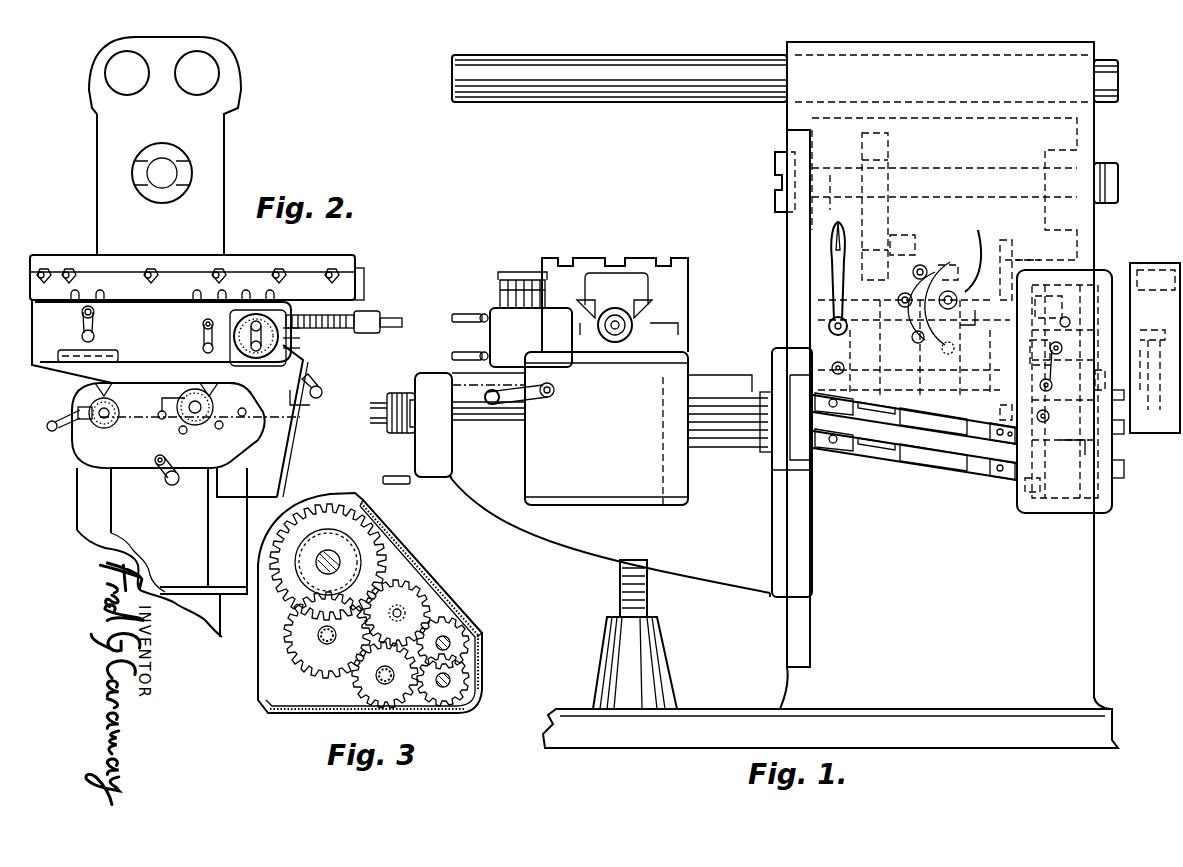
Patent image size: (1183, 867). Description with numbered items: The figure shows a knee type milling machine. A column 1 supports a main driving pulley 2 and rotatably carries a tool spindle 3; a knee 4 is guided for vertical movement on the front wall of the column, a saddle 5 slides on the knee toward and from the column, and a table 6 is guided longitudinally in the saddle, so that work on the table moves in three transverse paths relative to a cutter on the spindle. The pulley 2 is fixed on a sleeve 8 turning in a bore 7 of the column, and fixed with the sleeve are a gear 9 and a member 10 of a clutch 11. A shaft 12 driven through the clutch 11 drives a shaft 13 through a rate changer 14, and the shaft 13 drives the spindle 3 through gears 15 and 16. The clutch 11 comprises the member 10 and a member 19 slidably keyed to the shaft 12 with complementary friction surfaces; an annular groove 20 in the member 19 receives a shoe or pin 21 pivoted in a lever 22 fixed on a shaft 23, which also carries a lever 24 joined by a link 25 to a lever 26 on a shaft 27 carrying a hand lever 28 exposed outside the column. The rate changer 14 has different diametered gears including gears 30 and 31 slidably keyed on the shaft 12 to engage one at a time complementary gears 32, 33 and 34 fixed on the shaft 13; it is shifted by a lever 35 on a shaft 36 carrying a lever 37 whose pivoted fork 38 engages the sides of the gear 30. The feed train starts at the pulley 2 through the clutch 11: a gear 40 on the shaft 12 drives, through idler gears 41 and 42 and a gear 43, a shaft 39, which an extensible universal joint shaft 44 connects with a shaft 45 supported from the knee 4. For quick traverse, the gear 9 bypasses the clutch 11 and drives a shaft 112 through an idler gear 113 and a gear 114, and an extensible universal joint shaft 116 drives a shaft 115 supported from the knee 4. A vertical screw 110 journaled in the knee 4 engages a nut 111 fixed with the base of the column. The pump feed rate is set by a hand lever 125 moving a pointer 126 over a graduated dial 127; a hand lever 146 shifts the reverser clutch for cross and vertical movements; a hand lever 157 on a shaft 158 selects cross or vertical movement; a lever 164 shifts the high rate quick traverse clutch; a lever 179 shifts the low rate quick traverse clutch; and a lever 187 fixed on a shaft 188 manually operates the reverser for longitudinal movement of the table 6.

In FIG. 1, the column 1 is at (793, 258).
In FIG. 1, the main or driving pulley 2 is at (1175, 268).
In FIG. 2, the tool spindle 3 is at (148, 160).
In FIG. 1, the tool spindle 3 is at (775, 160).
In FIG. 2, the knee 4 is at (270, 500).
In FIG. 1, the knee 4 is at (737, 580).
In FIG. 1, the saddle 5 is at (686, 365).
In FIG. 2, the table 6 is at (292, 300).
In FIG. 1, the table 6 is at (680, 282).
In FIG. 1, the bore 7 is at (1148, 372).
In FIG. 1, the sleeve 8 is at (663, 377).
In FIG. 3, the gear 9 is at (375, 530).
In FIG. 1, the gear 9 is at (495, 320).
In FIG. 1, the clutch member 10 is at (678, 335).
In FIG. 1, the clutch 11 is at (1090, 270).
In FIG. 2, the shaft 12 is at (50, 417).
In FIG. 3, the shaft 12 is at (320, 566).
In FIG. 1, the shaft 12 is at (1140, 338).
In FIG. 1, the shaft 13 is at (1080, 240).
In FIG. 1, the rate changer 14 is at (978, 230).
In FIG. 1, the gear 15 is at (887, 292).
In FIG. 1, the gear 16 is at (884, 147).
In FIG. 1, the clutch member 19 is at (1050, 290).
In FIG. 1, the annular groove 20 is at (1070, 326).
In FIG. 1, the shoe or pin 21 is at (1063, 350).
In FIG. 1, the lever 22 is at (1050, 392).
In FIG. 1, the shaft 23 is at (1050, 415).
In FIG. 1, the lever 24 is at (1071, 449).
In FIG. 1, the link or rod 25 is at (985, 398).
In FIG. 1, the lever 26 is at (848, 362).
In FIG. 1, the shaft 27 is at (828, 325).
In FIG. 1, the hand lever 28 is at (832, 228).
In FIG. 1, the gear 30 is at (938, 392).
In FIG. 1, the gear 31 is at (902, 332).
In FIG. 1, the gear 32 is at (1006, 240).
In FIG. 1, the gear 33 is at (955, 240).
In FIG. 1, the gear 34 is at (898, 232).
In FIG. 1, the lever 35 is at (930, 270).
In FIG. 1, the shaft 36 is at (958, 296).
In FIG. 1, the lever 37 is at (962, 328).
In FIG. 1, the pivoted fork 38 is at (955, 355).
In FIG. 3, the shaft 39 is at (452, 678).
In FIG. 1, the shaft 39 is at (1050, 485).
In FIG. 3, the gear 40 is at (362, 545).
In FIG. 1, the gear 40 is at (1050, 296).
In FIG. 3, the idler gear 41 is at (312, 650).
In FIG. 1, the idler gear 41 is at (1039, 352).
In FIG. 3, the idler gear 42 is at (372, 682).
In FIG. 3, the gear 43 is at (499, 688).
In FIG. 1, the gear 43 is at (1020, 480).
In FIG. 1, the extensible universal joint shaft 44 is at (940, 465).
In FIG. 1, the shaft 45 is at (770, 445).
In FIG. 1, the vertical screw 110 is at (620, 583).
In FIG. 1, the nut 111 is at (618, 617).
In FIG. 3, the shaft 112 is at (450, 642).
In FIG. 1, the shaft 112 is at (1110, 440).
In FIG. 3, the idler gear 113 is at (410, 595).
In FIG. 1, the idler gear 113 is at (1112, 379).
In FIG. 3, the gear 114 is at (452, 620).
In FIG. 1, the gear 114 is at (1110, 485).
In FIG. 1, the shaft 115 is at (778, 400).
In FIG. 1, the extensible universal joint shaft 116 is at (918, 420).
In FIG. 2, the hand lever 125 is at (300, 348).
In FIG. 1, the hand lever 125 is at (482, 358).
In FIG. 2, the pointer 126 is at (300, 338).
In FIG. 2, the dial 127 is at (300, 328).
In FIG. 2, the hand lever 146 is at (70, 413).
In FIG. 2, the hand lever 157 is at (167, 478).
In FIG. 1, the hand lever 157 is at (405, 476).
In FIG. 2, the shaft 158 is at (157, 458).
In FIG. 2, the lever 164 is at (203, 338).
In FIG. 2, the lever 179 is at (322, 390).
In FIG. 1, the lever 179 is at (499, 405).
In FIG. 2, the lever 187 is at (95, 318).
In FIG. 1, the lever 187 is at (490, 314).
In FIG. 2, the shaft 188 is at (82, 334).